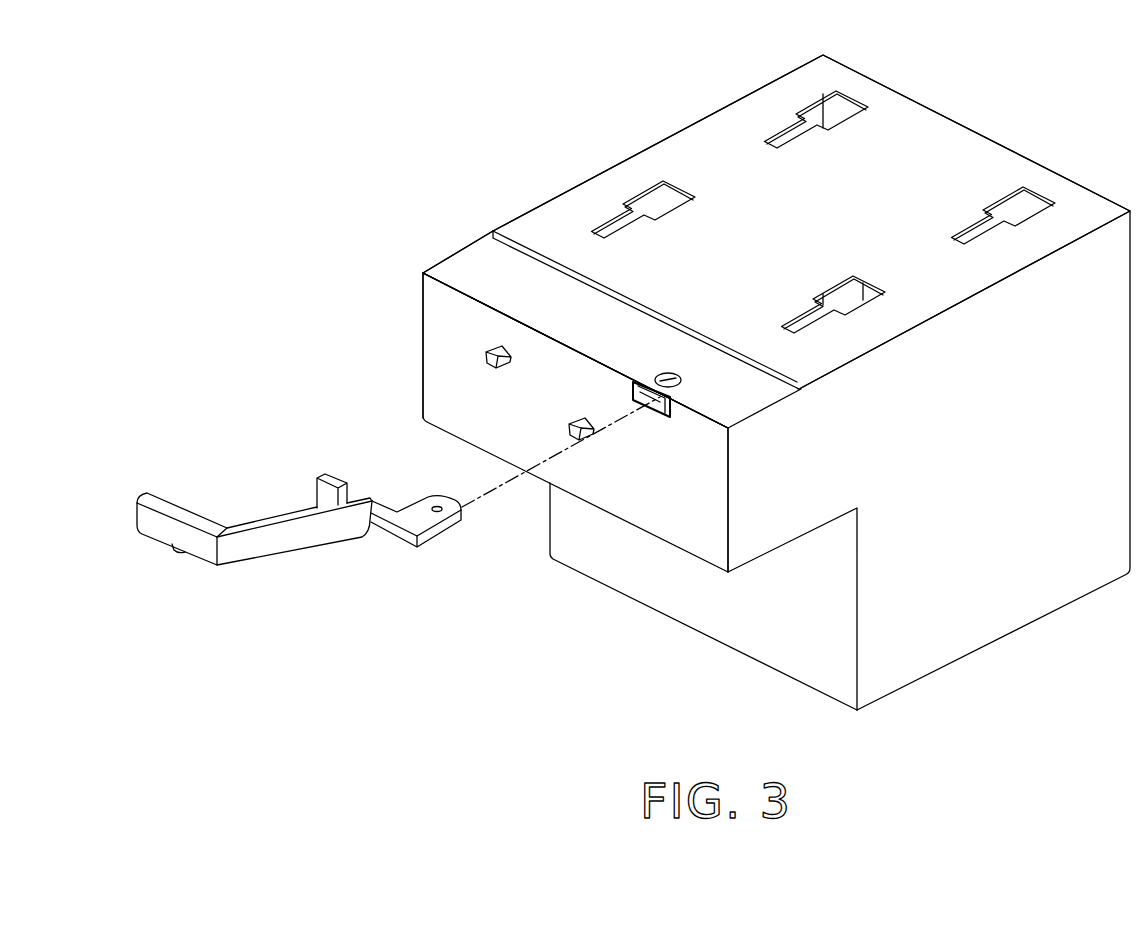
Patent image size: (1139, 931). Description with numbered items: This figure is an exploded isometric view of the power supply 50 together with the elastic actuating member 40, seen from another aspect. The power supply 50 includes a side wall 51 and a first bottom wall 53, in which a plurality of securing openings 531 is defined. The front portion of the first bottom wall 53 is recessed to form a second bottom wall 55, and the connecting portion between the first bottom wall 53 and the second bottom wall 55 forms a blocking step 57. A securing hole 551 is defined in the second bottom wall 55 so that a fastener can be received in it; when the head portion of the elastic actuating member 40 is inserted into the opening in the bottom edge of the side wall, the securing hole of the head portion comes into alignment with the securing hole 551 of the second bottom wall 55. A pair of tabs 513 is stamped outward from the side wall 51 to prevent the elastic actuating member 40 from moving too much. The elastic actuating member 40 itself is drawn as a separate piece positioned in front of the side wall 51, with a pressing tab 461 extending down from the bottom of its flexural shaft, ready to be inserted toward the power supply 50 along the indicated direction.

The elastic actuating member 40 is at (398, 518).
The pressing tab 461 is at (327, 475).
The power supply 50 is at (992, 118).
The side wall 51 is at (450, 330).
The tabs 513 is at (493, 363).
The first bottom wall 53 is at (763, 98).
The securing openings 531 is at (647, 203).
The second bottom wall 55 is at (443, 282).
The securing hole 551 is at (448, 277).
The blocking step 57 is at (636, 380).